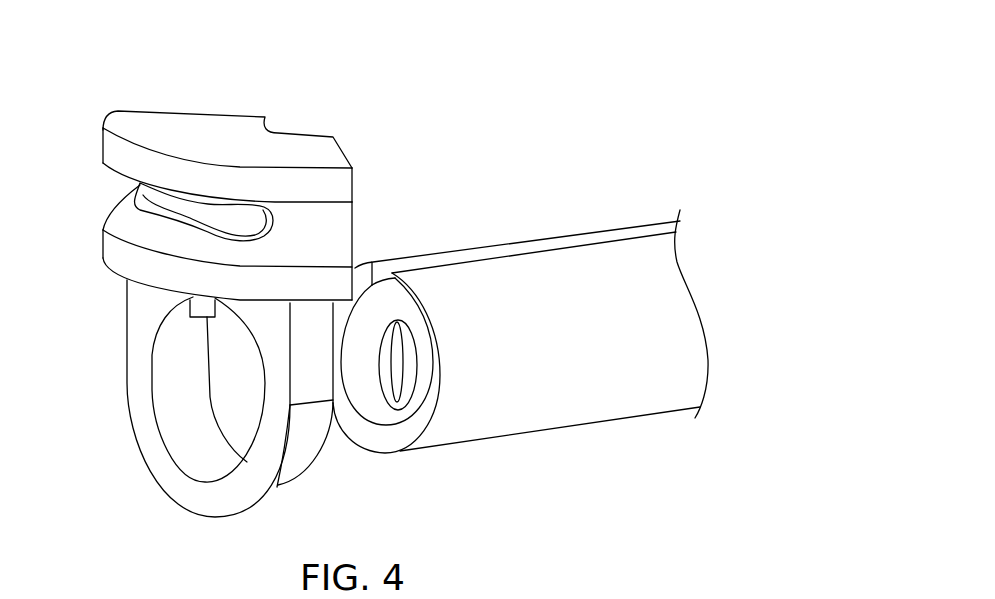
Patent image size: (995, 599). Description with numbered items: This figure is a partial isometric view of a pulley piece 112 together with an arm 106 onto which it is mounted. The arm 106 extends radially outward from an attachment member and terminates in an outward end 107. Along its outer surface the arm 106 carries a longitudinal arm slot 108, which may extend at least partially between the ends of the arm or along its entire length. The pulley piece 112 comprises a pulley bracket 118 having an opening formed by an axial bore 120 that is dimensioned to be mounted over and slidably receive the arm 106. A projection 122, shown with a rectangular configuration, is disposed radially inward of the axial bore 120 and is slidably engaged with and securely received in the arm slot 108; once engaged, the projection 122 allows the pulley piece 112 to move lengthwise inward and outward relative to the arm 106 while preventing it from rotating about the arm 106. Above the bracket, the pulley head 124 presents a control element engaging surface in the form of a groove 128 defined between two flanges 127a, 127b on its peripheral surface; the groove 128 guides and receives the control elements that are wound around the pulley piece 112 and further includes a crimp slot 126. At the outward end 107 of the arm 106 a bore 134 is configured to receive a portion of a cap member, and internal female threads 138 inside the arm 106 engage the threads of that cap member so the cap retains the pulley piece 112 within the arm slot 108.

The pulley piece 112 is at (153, 60).
The arm 106 is at (593, 185).
The arm slot 108 is at (530, 243).
The outward end 107 is at (448, 445).
The pulley head 124 is at (150, 108).
The crimp slot 126 is at (148, 203).
The flange 127a is at (112, 148).
The flange 127b is at (110, 248).
The groove 128 is at (323, 225).
The pulley bracket 118 is at (142, 313).
The axial bore 120 is at (235, 407).
The projection 122 is at (215, 317).
The bore 134 is at (365, 380).
The internal female threads 138 is at (397, 390).